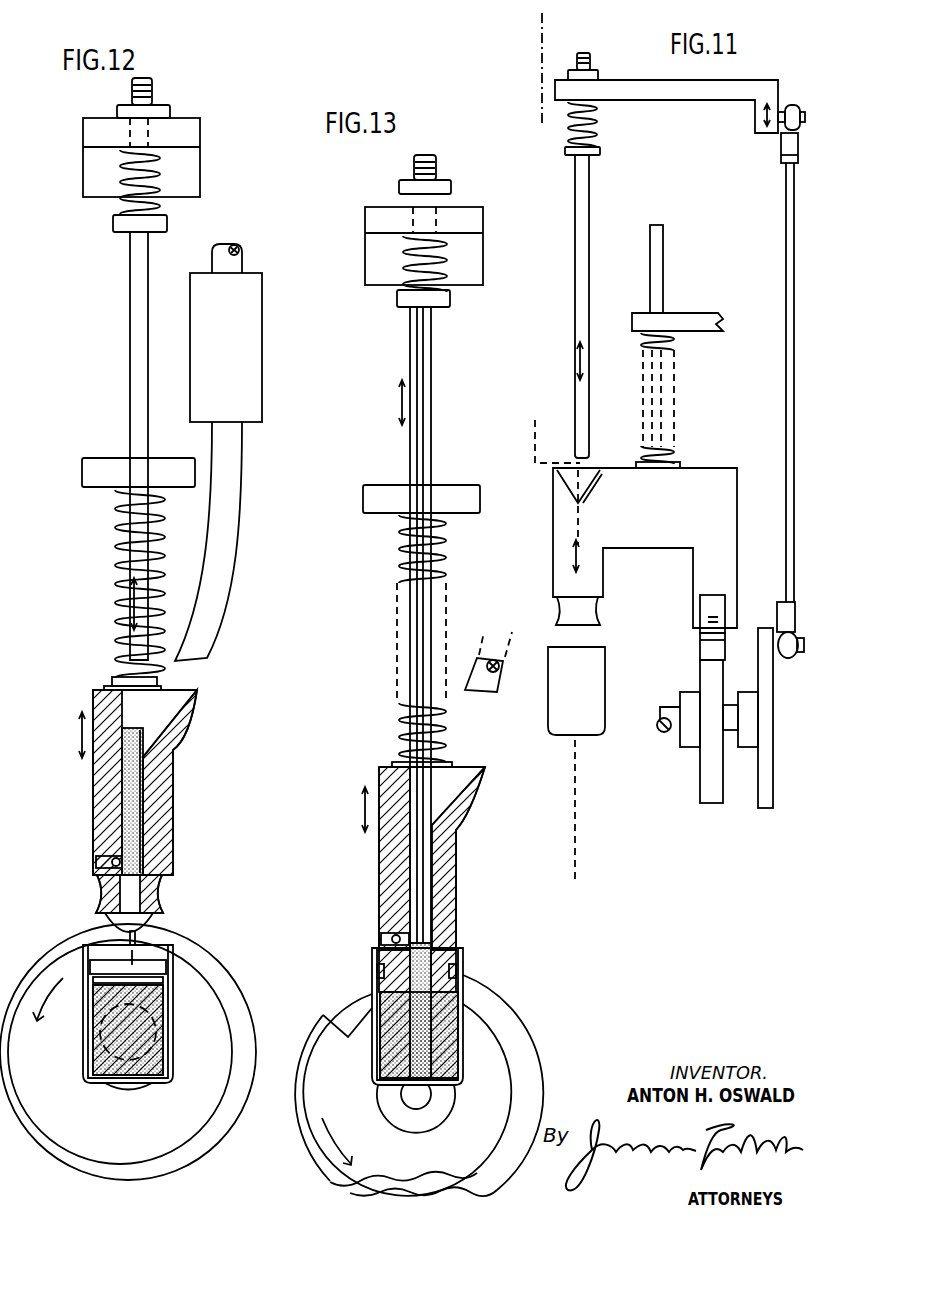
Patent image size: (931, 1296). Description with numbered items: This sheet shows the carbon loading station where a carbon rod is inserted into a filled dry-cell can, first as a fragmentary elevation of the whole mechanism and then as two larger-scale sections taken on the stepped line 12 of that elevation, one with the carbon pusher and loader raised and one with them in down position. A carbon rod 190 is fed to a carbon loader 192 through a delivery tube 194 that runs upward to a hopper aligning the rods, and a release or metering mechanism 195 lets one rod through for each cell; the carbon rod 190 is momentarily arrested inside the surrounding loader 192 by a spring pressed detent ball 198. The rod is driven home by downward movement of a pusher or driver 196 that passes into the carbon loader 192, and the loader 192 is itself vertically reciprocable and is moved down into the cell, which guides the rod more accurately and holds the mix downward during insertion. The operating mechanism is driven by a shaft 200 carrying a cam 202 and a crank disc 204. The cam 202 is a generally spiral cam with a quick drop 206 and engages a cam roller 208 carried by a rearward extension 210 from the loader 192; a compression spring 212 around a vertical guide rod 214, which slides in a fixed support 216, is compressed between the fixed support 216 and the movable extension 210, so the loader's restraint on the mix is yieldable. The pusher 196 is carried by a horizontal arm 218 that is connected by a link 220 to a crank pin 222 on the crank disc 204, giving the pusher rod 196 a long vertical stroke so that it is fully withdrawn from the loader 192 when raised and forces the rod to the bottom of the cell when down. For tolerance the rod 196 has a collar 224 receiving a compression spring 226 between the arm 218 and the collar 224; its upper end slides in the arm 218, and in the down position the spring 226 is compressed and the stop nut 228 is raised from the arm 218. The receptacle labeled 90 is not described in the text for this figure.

In FIG. 11, the stepped line 12 is at (533, 21).
In FIG. 12, the receptacle 90 is at (172, 975).
In FIG. 11, the receptacle 90 is at (605, 677).
In FIG. 12, the carbon rod 190 is at (158, 801).
In FIG. 13, the carbon rod 190 is at (461, 1016).
In FIG. 12, the carbon loader 192 is at (174, 825).
In FIG. 13, the carbon loader 192 is at (457, 863).
In FIG. 11, the carbon loader 192 is at (557, 527).
In FIG. 12, the delivery tube 194 is at (232, 552).
In FIG. 13, the delivery tube 194 is at (480, 692).
In FIG. 12, the release or metering mechanism 195 is at (262, 361).
In FIG. 12, the pusher or driver 196 is at (132, 365).
In FIG. 13, the pusher or driver 196 is at (410, 625).
In FIG. 11, the pusher or driver 196 is at (589, 223).
In FIG. 12, the spring pressed detent ball 198 is at (96, 860).
In FIG. 11, the shaft 200 is at (675, 734).
In FIG. 12, the cam 202 is at (195, 1015).
In FIG. 13, the cam 202 is at (498, 1103).
In FIG. 11, the cam 202 is at (713, 790).
In FIG. 12, the crank disc 204 is at (228, 968).
In FIG. 13, the crank disc 204 is at (522, 1037).
In FIG. 11, the crank disc 204 is at (769, 811).
In FIG. 12, the quick drop 206 is at (137, 940).
In FIG. 13, the quick drop 206 is at (338, 1022).
In FIG. 11, the quick drop 206 is at (701, 645).
In FIG. 12, the cam roller 208 is at (157, 918).
In FIG. 11, the cam roller 208 is at (720, 606).
In FIG. 11, the rearward extension 210 is at (676, 551).
In FIG. 12, the compression spring 212 is at (158, 545).
In FIG. 13, the compression spring 212 is at (446, 562).
In FIG. 11, the compression spring 212 is at (675, 453).
In FIG. 11, the vertical guide rod 214 is at (664, 256).
In FIG. 12, the fixed support 216 is at (120, 466).
In FIG. 13, the fixed support 216 is at (452, 488).
In FIG. 11, the fixed support 216 is at (689, 320).
In FIG. 12, the horizontal arm 218 is at (190, 134).
In FIG. 11, the horizontal arm 218 is at (670, 92).
In FIG. 11, the link 220 is at (795, 328).
In FIG. 11, the crank pin 222 is at (803, 647).
In FIG. 12, the collar 224 is at (167, 224).
In FIG. 13, the collar 224 is at (452, 298).
In FIG. 11, the collar 224 is at (599, 152).
In FIG. 12, the compression spring 226 is at (165, 188).
In FIG. 13, the compression spring 226 is at (447, 272).
In FIG. 11, the compression spring 226 is at (598, 130).
In FIG. 12, the stop nut 228 is at (170, 110).
In FIG. 13, the stop nut 228 is at (452, 190).
In FIG. 11, the stop nut 228 is at (598, 72).